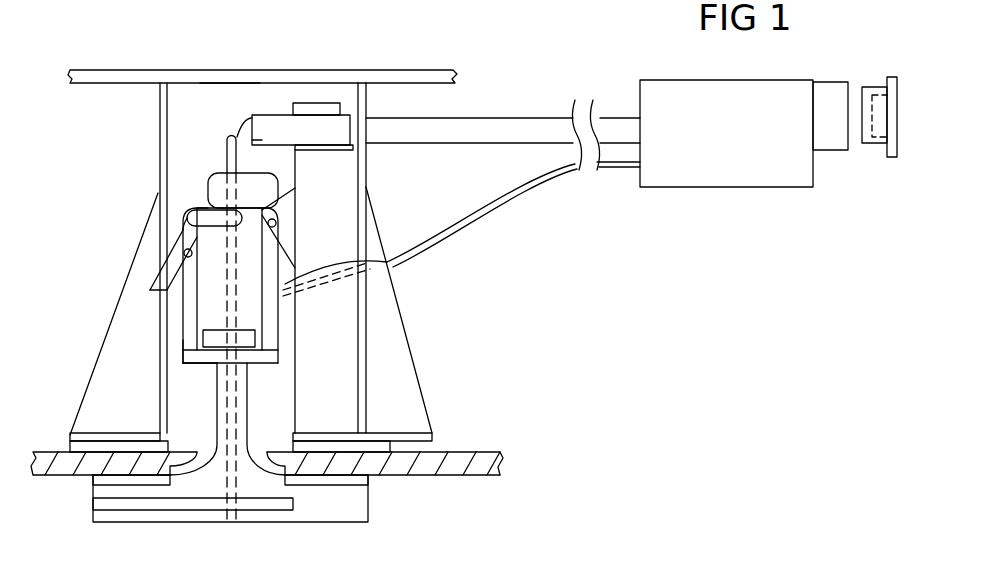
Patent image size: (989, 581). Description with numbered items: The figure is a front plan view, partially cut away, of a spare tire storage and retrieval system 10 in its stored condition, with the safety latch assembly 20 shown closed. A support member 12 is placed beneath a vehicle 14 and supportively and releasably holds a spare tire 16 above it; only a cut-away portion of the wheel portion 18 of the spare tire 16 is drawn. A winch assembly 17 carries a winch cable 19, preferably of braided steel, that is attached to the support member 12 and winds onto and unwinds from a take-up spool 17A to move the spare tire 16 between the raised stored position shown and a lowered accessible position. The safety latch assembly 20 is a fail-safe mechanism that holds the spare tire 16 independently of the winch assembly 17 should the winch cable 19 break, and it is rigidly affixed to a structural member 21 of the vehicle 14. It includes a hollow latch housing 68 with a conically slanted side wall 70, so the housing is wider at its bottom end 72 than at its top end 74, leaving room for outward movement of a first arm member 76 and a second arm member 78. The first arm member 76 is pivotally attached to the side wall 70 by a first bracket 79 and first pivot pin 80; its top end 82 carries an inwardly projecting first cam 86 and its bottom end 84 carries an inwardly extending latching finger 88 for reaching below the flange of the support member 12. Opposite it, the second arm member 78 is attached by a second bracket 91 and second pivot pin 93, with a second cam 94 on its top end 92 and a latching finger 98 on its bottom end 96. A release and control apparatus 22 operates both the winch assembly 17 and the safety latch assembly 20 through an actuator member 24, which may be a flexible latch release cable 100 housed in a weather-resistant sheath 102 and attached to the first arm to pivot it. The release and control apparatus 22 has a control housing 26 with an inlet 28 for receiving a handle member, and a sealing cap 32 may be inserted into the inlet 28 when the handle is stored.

The system 10 is at (551, 304).
The support member 12 is at (175, 532).
The vehicle 14 is at (124, 64).
The spare tire 16 is at (490, 490).
The winch assembly 17 is at (262, 100).
The take-up spool 17A is at (318, 123).
The wheel portion 18 is at (402, 477).
The winch cable 19 is at (218, 136).
The safety latch assembly 20 is at (108, 298).
The structural member 21 is at (228, 70).
The release and control apparatus 22 is at (778, 204).
The actuator member 24 is at (472, 239).
The control housing 26 is at (683, 66).
The inlet 28 is at (848, 108).
The sealing cap 32 is at (900, 147).
The latch housing 68 is at (440, 412).
The side wall 70 is at (366, 187).
The bottom end 72 is at (73, 428).
The top end 74 is at (160, 107).
The first arm member 76 is at (290, 317).
The second arm member 78 is at (160, 293).
The first bracket 79 is at (283, 230).
The first pivot pin 80 is at (296, 210).
The top end 82 is at (270, 178).
The bottom end 84 is at (280, 340).
The first cam 86 is at (205, 208).
The latching finger 88 is at (280, 365).
The second bracket 91 is at (183, 255).
The top end 92 is at (187, 215).
The second pivot pin 93 is at (235, 226).
The second cam 94 is at (190, 212).
The bottom end 96 is at (185, 342).
The latching finger 98 is at (210, 363).
The latch release cable 100 is at (388, 266).
The sheath 102 is at (498, 207).